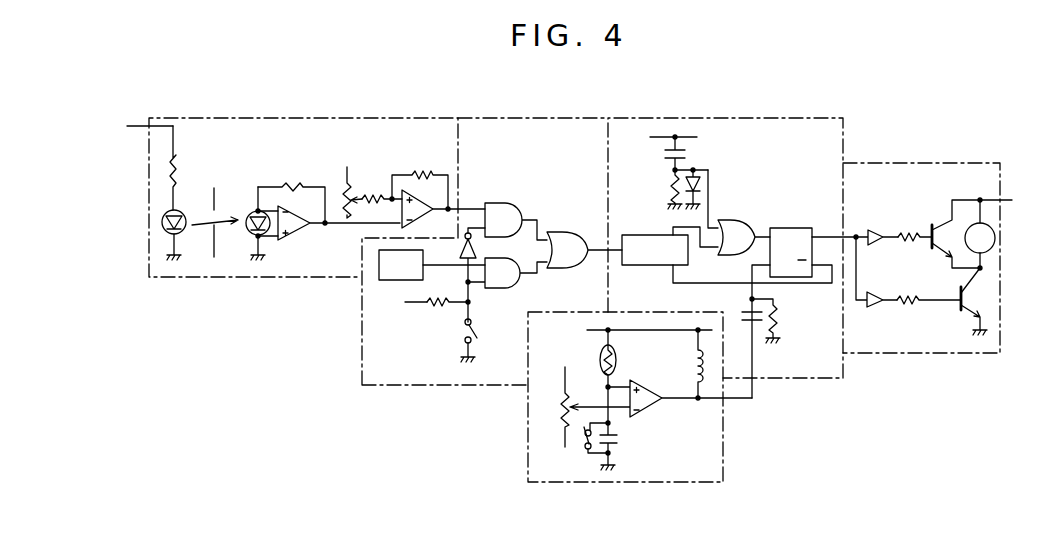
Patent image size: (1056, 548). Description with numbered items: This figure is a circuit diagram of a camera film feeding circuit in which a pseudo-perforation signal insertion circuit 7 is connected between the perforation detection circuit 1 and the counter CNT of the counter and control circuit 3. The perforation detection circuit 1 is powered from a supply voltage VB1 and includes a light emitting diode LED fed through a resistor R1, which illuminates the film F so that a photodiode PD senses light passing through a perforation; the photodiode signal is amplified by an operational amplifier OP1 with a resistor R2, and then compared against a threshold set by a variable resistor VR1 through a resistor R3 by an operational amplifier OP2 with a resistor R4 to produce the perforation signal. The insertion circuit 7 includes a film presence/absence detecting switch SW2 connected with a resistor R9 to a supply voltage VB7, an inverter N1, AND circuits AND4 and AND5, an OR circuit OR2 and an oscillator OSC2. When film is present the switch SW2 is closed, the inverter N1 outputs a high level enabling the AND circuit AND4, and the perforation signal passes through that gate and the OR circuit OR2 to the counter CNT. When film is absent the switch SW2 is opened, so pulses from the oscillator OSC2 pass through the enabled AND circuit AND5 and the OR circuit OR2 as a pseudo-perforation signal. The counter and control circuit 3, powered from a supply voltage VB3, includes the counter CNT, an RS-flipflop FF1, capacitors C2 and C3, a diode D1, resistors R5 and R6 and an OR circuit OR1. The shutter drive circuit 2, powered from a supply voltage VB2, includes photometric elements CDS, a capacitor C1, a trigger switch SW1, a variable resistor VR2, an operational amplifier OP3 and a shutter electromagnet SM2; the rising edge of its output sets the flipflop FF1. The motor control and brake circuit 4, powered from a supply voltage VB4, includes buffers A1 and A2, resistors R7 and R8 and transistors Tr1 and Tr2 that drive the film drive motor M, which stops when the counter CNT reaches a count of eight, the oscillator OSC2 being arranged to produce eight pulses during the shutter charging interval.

The perforation detection circuit 1 is at (320, 118).
The pseudo-perforation signal insertion circuit 7 is at (523, 120).
The counter and control circuit 3 is at (756, 120).
The shutter drive circuit 2 is at (637, 482).
The motor control and brake circuit 4 is at (947, 162).
The supply voltage VB1 is at (135, 128).
The resistor R1 is at (180, 169).
The light emitting diode LED is at (183, 235).
The film F is at (215, 192).
The photodiode PD is at (247, 232).
The operational amplifier OP1 is at (304, 230).
The resistor R2 is at (290, 185).
The variable resistor VR1 is at (347, 169).
The resistor R3 is at (378, 188).
The resistor R4 is at (423, 173).
The operational amplifier OP2 is at (443, 214).
The AND circuit AND4 is at (528, 191).
The inverter N1 is at (475, 242).
The AND circuit AND5 is at (504, 290).
The oscillator OSC2 is at (432, 265).
The OR circuit OR2 is at (572, 238).
The supply voltage VB7 is at (403, 303).
The resistor R9 is at (437, 316).
The film presence/absence detecting switch SW2 is at (474, 332).
The supply voltage VB3 is at (683, 138).
The capacitor C2 is at (689, 156).
The resistor R5 is at (666, 189).
The diode D1 is at (701, 185).
The counter CNT is at (646, 265).
The OR circuit OR1 is at (736, 255).
The RS-flipflop FF1 is at (790, 228).
The capacitor C3 is at (742, 328).
The resistor R6 is at (780, 315).
The supply voltage VB2 is at (649, 324).
The photometric elements CDS is at (617, 354).
The operational amplifier OP3 is at (649, 408).
The shutter electromagnet SM2 is at (693, 372).
The variable resistor VR2 is at (570, 388).
The trigger switch SW1 is at (582, 447).
The capacitor C1 is at (620, 440).
The buffer A1 is at (876, 229).
The resistor R7 is at (905, 233).
The transistor Tr1 is at (936, 222).
The film drive motor M is at (980, 234).
The supply voltage VB4 is at (1006, 203).
The buffer A2 is at (873, 292).
The resistor R8 is at (917, 296).
The transistor Tr2 is at (956, 312).